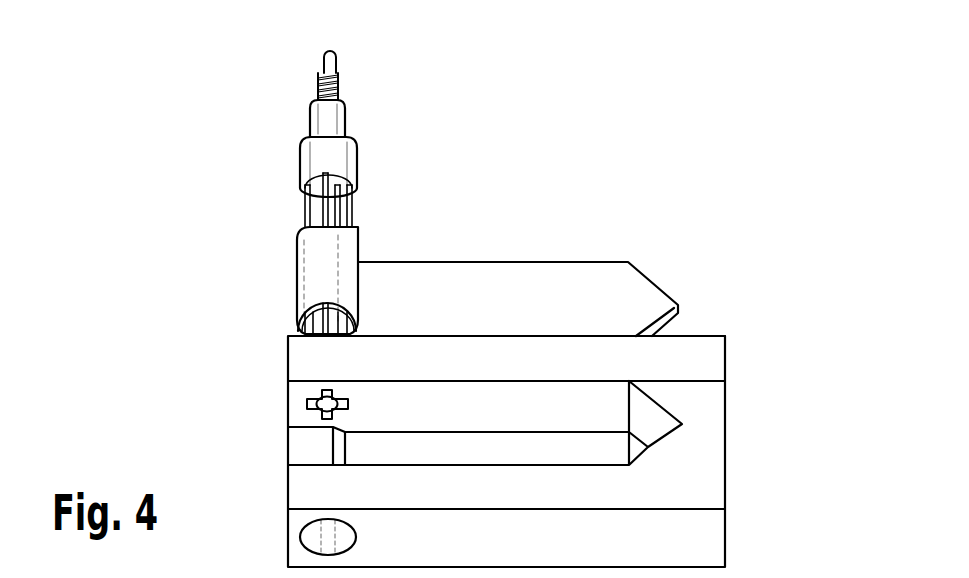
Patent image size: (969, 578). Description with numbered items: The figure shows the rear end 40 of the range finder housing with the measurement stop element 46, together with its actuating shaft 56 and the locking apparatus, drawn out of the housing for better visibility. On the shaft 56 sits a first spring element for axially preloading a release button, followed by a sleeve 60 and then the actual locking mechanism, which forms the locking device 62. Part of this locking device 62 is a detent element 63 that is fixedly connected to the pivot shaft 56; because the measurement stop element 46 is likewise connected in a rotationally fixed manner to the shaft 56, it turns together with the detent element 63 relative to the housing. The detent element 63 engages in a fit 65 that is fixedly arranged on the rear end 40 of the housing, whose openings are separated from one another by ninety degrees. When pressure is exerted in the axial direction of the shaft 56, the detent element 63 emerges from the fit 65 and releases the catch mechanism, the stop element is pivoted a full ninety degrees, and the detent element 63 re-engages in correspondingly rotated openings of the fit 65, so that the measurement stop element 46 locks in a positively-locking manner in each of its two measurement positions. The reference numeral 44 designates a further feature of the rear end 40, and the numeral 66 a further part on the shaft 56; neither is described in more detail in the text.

The rear end of the housing 40 is at (682, 477).
The receiving slot / pocket 44 is at (588, 408).
The measurement stop element 46 is at (523, 283).
The actuating shaft 56 is at (332, 63).
The sleeve 60 is at (335, 125).
The locking device 62 is at (278, 212).
The detent element 63 is at (337, 210).
The fit 65 is at (307, 403).
The spring 66 is at (318, 82).